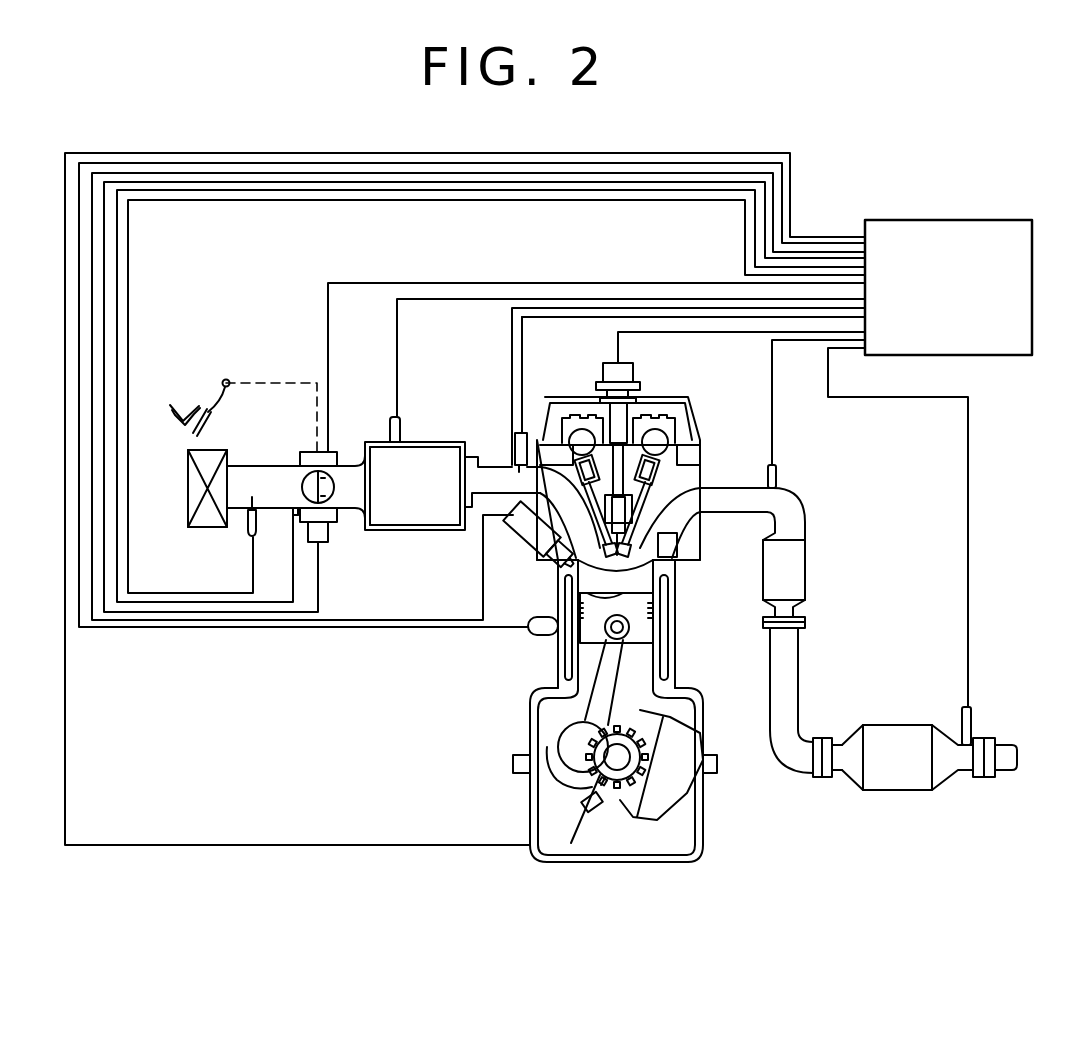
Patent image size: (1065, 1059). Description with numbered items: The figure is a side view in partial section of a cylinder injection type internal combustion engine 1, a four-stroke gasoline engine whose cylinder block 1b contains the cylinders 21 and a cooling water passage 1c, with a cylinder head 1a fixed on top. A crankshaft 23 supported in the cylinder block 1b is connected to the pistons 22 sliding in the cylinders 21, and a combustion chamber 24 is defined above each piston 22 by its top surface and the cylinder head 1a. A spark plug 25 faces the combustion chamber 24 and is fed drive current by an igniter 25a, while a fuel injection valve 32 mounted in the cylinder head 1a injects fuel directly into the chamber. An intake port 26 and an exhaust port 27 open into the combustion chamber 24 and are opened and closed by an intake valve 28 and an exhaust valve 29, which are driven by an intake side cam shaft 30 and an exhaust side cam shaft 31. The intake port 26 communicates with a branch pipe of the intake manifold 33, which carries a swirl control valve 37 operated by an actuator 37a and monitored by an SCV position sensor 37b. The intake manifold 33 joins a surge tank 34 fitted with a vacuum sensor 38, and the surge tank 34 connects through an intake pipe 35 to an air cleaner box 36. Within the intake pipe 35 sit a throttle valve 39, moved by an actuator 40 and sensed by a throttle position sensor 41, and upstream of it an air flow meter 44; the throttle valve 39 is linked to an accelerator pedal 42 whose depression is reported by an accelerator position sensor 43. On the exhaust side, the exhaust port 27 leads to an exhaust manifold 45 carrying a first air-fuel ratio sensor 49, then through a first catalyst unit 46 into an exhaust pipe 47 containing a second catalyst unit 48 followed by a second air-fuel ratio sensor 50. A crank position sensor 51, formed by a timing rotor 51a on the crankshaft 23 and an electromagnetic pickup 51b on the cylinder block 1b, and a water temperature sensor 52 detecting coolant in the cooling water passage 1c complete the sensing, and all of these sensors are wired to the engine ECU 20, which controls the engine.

The internal combustion engine 1 is at (505, 721).
The cylinder head 1a is at (697, 450).
The cylinder block 1b is at (674, 614).
The cooling water passage 1c is at (568, 665).
The engine ECU 20 is at (940, 220).
The cylinder 21 is at (618, 655).
The piston 22 is at (640, 636).
The crankshaft 23 is at (622, 755).
The combustion chamber 24 is at (650, 592).
The spark plug 25 is at (680, 572).
The igniter 25a is at (640, 371).
The intake port 26 is at (560, 537).
The exhaust port 27 is at (702, 480).
The intake valve 28 is at (597, 575).
The exhaust valve 29 is at (680, 540).
The intake side cam shaft 30 is at (582, 428).
The exhaust side cam shaft 31 is at (665, 432).
The fuel injection valve 32 is at (520, 535).
The intake manifold 33 is at (483, 460).
The surge tank 34 is at (414, 528).
The intake pipe 35 is at (278, 512).
The air cleaner box 36 is at (188, 530).
The swirl control valve 37 is at (497, 490).
The actuator 37a is at (512, 455).
The SCV position sensor 37b is at (524, 440).
The vacuum sensor 38 is at (398, 440).
The throttle valve 39 is at (334, 485).
The actuator 40 is at (334, 520).
The throttle position sensor 41 is at (323, 547).
The accelerator pedal 42 is at (205, 418).
The accelerator position sensor 43 is at (342, 438).
The air flow meter 44 is at (246, 530).
The exhaust manifold 45 is at (804, 507).
The first catalyst unit 46 is at (808, 576).
The exhaust pipe 47 is at (805, 650).
The second catalyst unit 48 is at (888, 725).
The first air-fuel ratio sensor 49 is at (778, 472).
The second air-fuel ratio sensor 50 is at (972, 712).
The crank position sensor 51 is at (688, 777).
The timing rotor 51a is at (662, 765).
The electromagnetic pickup 51b is at (608, 798).
The water temperature sensor 52 is at (531, 634).